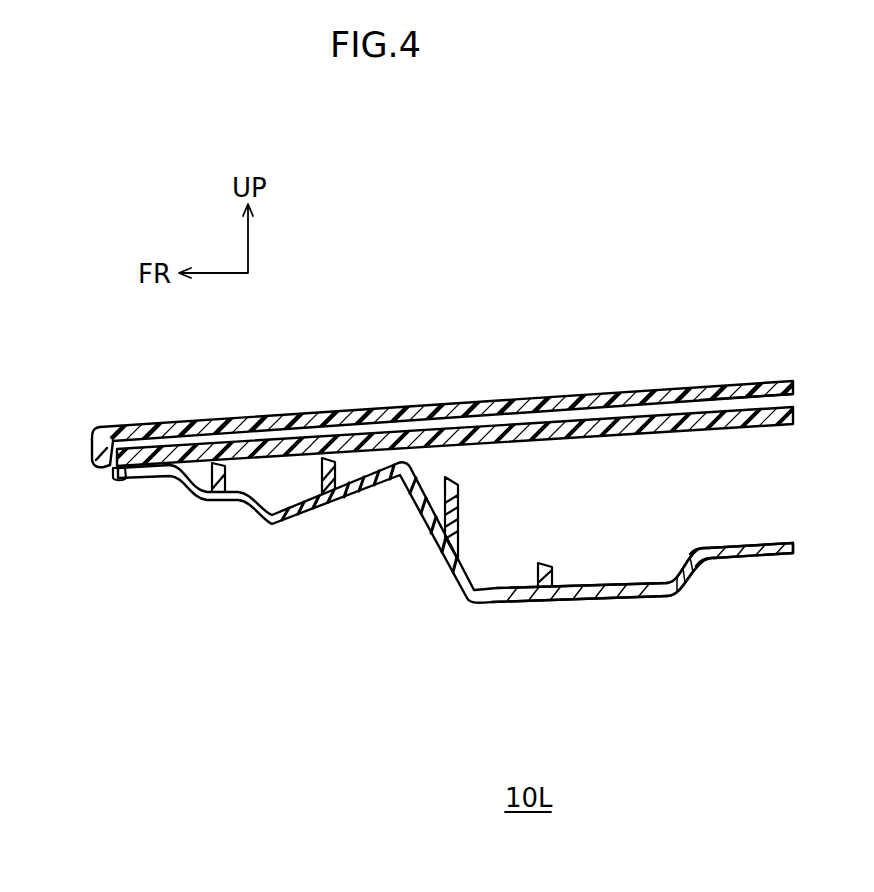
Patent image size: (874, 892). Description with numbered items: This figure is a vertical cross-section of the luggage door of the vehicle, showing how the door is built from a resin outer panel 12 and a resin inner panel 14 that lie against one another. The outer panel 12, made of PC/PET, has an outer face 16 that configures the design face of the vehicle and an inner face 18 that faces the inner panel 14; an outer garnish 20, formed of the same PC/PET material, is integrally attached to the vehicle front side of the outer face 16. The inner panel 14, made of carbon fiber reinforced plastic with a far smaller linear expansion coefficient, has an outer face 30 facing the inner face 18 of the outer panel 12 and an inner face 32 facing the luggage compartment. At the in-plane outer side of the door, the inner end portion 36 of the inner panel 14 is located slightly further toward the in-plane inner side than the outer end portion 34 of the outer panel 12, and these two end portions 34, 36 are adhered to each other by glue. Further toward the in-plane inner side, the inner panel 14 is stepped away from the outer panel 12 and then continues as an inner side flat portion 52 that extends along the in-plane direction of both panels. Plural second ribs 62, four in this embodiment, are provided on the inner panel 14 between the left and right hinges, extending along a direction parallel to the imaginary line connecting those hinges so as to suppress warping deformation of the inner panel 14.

The resin outer panel 12 is at (483, 435).
The resin inner panel 14 is at (755, 558).
The outer face 16 is at (753, 404).
The inner face 18 is at (753, 427).
The outer garnish 20 is at (459, 403).
The outer face 30 is at (698, 548).
The inner face 32 is at (704, 563).
The outer end portion 34 is at (125, 450).
The inner end portion 36 is at (122, 481).
The inner side flat portion 52 is at (593, 601).
The second ribs 62 is at (225, 466).